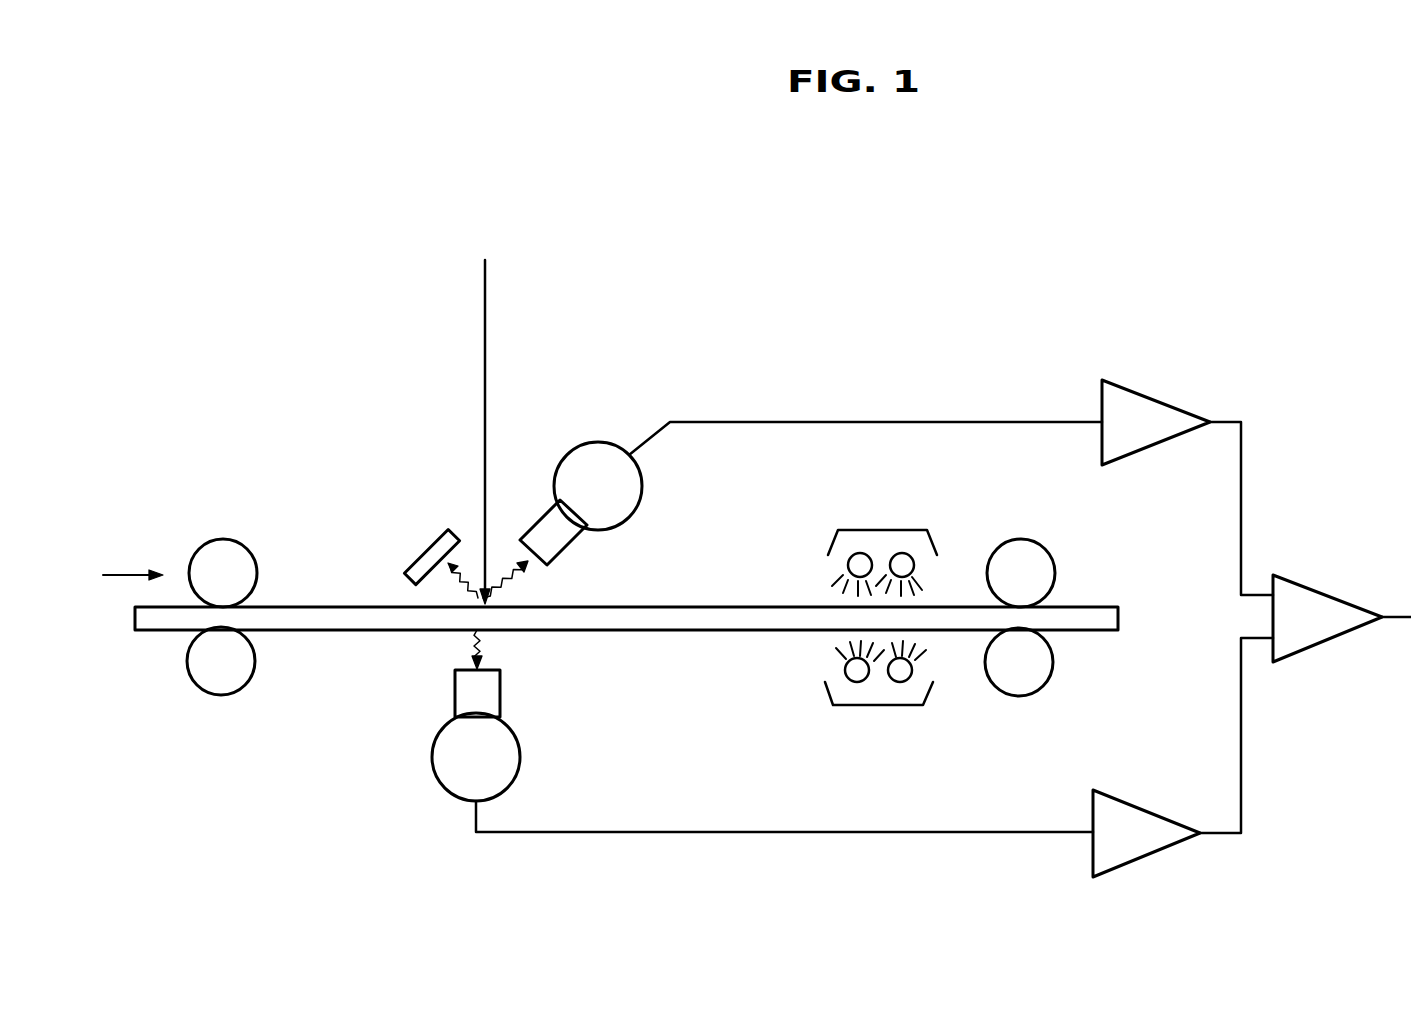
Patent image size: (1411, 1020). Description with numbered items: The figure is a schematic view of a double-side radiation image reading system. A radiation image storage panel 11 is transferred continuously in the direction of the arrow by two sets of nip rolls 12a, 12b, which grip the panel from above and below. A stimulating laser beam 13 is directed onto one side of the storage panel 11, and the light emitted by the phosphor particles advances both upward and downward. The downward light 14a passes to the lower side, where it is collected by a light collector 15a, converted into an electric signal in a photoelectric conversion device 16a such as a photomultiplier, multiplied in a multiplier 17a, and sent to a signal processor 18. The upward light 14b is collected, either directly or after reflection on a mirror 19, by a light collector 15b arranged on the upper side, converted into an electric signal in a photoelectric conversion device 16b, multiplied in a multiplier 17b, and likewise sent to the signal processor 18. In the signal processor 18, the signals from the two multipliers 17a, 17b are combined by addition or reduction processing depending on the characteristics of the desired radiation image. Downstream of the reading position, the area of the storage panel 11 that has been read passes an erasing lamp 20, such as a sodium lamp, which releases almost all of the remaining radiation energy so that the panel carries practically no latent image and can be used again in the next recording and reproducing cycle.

The radiation image storage panel 11 is at (133, 617).
The nip rolls 12a is at (223, 540).
The nip rolls 12b is at (1023, 540).
The laser beam 13 is at (487, 312).
The downward light 14a is at (472, 643).
The upward light 14b is at (468, 577).
The light collector 15a is at (500, 690).
The light collector 15b is at (535, 520).
The photoelectric conversion device 16a is at (520, 755).
The photoelectric conversion device 16b is at (598, 443).
The multiplier 17a is at (1140, 857).
The multiplier 17b is at (1142, 392).
The signal processor 18 is at (1322, 587).
The mirror 19 is at (413, 560).
The erasing lamp 20 is at (873, 528).